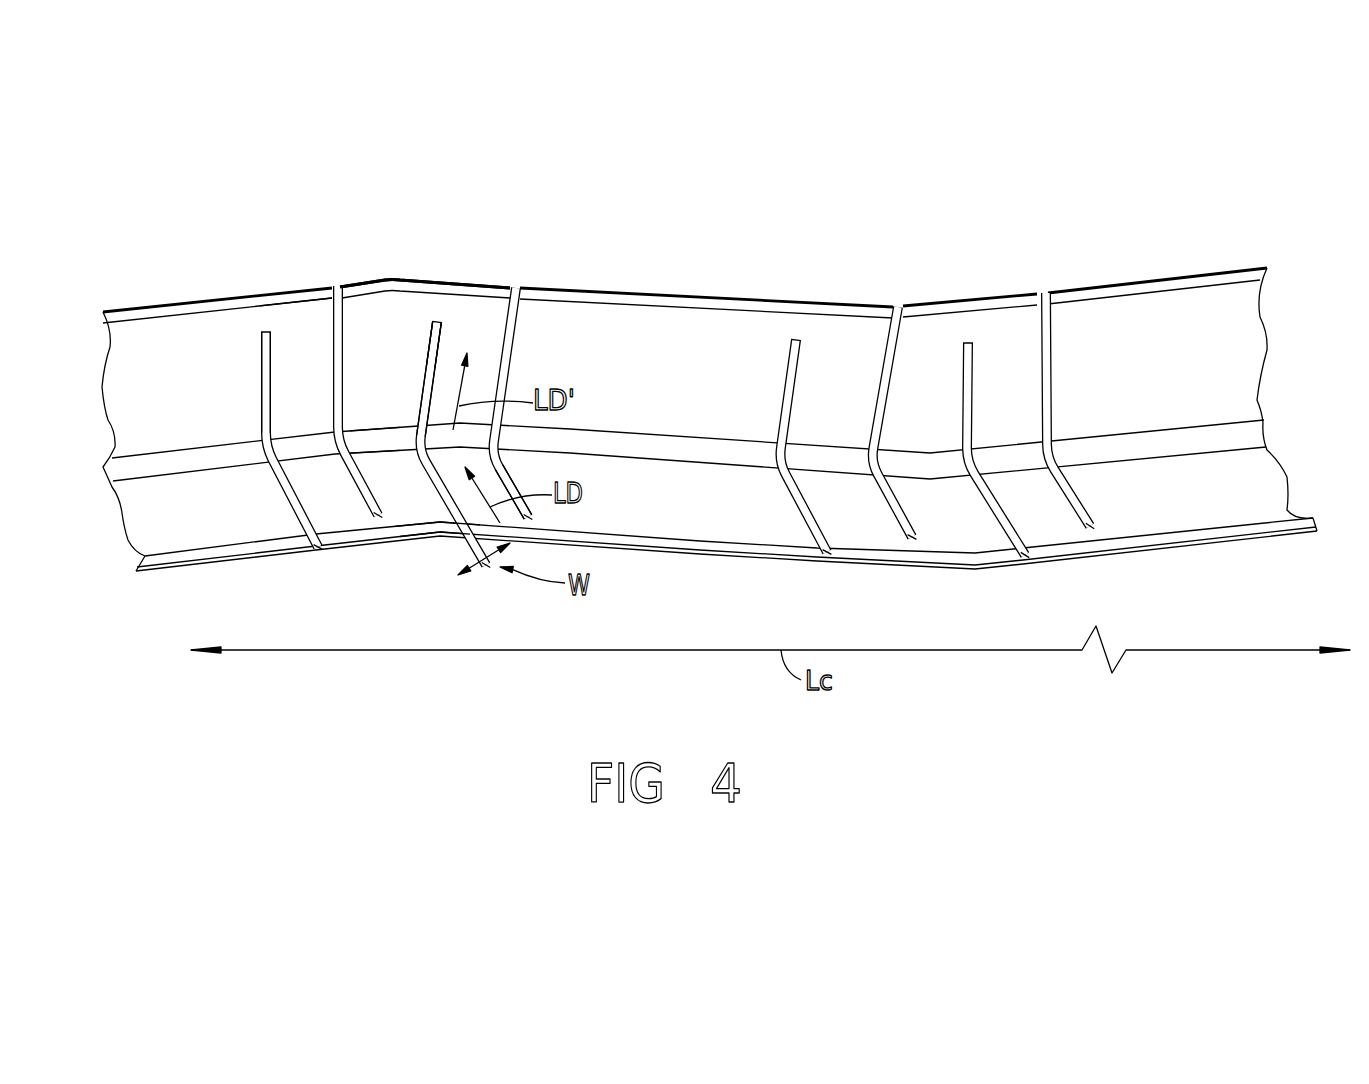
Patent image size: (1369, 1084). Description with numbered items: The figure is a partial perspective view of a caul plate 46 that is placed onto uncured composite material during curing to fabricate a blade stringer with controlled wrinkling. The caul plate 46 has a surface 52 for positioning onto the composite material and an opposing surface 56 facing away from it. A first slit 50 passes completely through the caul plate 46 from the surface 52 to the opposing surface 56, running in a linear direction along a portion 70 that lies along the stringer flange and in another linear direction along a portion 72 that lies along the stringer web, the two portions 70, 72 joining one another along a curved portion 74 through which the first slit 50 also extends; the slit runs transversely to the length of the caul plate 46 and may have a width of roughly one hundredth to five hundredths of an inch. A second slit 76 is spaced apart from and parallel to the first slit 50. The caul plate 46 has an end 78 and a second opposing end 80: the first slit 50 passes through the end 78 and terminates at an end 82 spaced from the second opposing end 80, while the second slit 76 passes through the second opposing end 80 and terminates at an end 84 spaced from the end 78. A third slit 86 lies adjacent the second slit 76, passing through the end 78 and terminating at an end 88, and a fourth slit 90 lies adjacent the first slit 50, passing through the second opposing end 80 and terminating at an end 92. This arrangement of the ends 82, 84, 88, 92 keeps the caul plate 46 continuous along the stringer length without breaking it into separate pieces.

The caul plate 46 is at (700, 422).
The first slit 50 is at (442, 343).
The surface 52 is at (550, 274).
The opposing surface 56 is at (150, 527).
The portion 70 is at (415, 502).
The portion 72 is at (406, 366).
The curved portion 74 is at (368, 435).
The second slit 76 is at (315, 298).
The end 78 is at (429, 558).
The second opposing end 80 is at (391, 266).
The end of first slit 82 is at (440, 322).
The end of second slit 84 is at (380, 520).
The third slit 86 is at (246, 382).
The end of third slit 88 is at (266, 330).
The fourth slit 90 is at (528, 347).
The end of fourth slit 92 is at (527, 519).